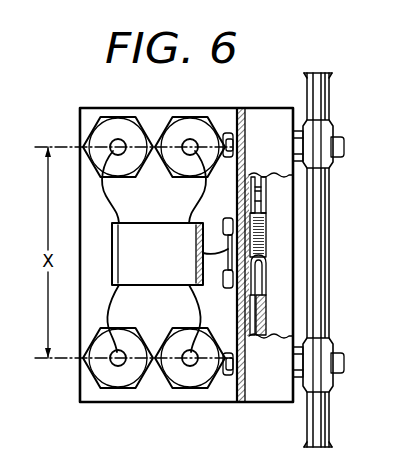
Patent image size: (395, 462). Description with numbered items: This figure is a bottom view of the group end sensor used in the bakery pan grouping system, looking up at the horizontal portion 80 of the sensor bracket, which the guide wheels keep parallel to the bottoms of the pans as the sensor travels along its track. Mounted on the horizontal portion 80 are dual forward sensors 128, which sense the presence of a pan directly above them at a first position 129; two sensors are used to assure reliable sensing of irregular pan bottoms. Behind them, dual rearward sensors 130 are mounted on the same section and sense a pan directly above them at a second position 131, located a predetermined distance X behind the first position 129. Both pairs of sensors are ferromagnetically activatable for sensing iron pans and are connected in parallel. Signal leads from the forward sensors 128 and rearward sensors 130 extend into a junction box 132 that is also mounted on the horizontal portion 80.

The horizontal portion 80 is at (218, 118).
The forward sensors 128 is at (133, 121).
The first position 129 is at (48, 146).
The rearward sensors 130 is at (140, 389).
The second position 131 is at (48, 360).
The junction box 132 is at (168, 271).